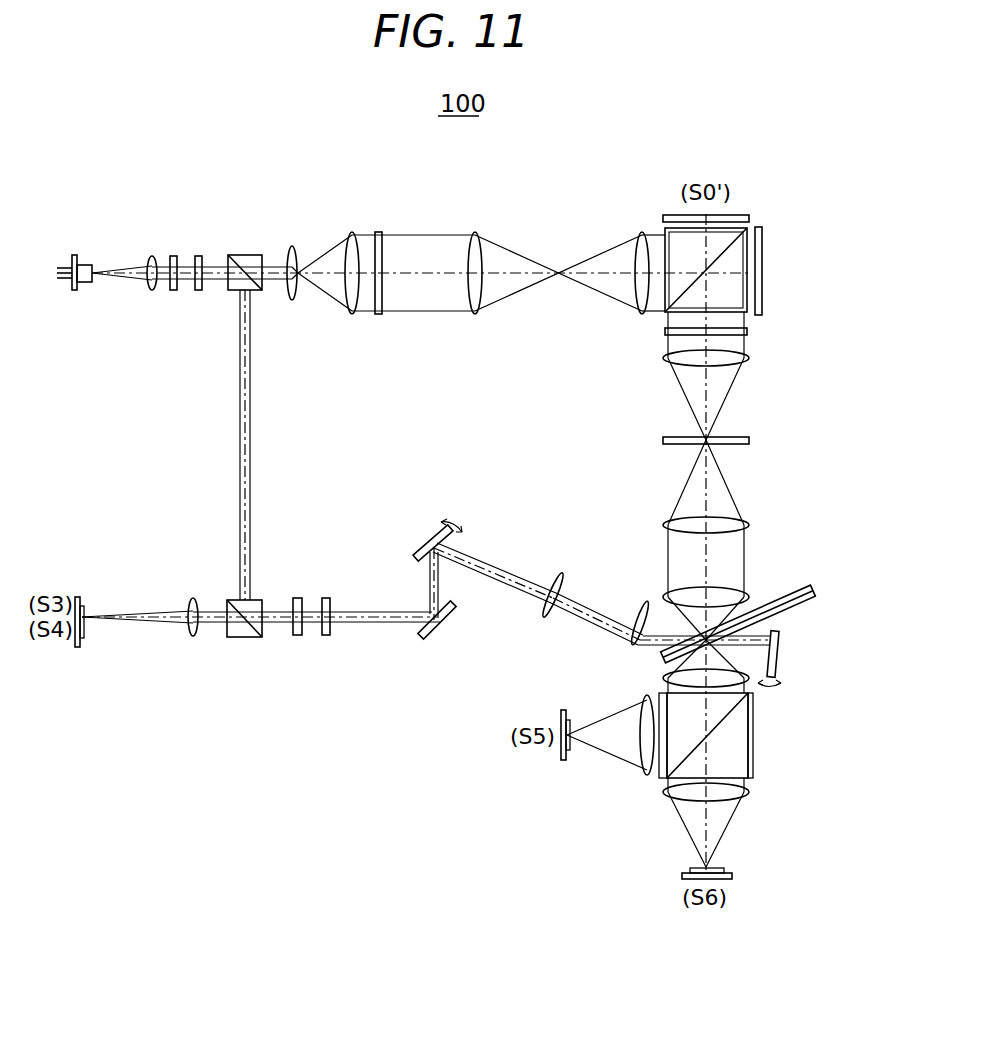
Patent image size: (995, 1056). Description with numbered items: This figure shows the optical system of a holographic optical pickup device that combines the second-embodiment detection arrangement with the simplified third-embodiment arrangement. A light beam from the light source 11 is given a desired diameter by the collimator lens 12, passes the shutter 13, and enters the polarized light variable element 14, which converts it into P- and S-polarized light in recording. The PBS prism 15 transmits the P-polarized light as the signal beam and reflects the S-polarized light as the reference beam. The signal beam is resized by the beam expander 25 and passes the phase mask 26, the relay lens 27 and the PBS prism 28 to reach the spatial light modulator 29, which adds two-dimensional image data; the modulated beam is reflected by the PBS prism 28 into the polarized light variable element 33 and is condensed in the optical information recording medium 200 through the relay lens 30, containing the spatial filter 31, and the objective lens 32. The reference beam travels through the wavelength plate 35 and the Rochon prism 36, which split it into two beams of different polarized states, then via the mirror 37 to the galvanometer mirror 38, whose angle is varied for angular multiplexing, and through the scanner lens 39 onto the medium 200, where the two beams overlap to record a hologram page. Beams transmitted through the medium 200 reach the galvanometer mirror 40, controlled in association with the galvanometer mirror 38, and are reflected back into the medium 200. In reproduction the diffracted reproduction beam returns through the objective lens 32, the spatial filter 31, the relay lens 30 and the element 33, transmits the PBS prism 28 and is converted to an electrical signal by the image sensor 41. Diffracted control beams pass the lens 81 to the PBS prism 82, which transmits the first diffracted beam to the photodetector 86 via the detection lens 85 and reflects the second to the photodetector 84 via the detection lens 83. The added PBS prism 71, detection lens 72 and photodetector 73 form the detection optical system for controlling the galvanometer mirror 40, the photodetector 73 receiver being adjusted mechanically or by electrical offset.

The light source 11 is at (84, 262).
The collimator lens 12 is at (150, 257).
The shutter 13 is at (173, 256).
The polarized light variable element 14 is at (198, 256).
The PBS prism 15 is at (236, 258).
The beam expander 25 is at (360, 222).
The phase mask 26 is at (378, 231).
The relay lens 27 is at (645, 224).
The PBS prism 28 is at (672, 242).
The spatial light modulator 29 is at (763, 258).
The relay lens 30 is at (659, 355).
The spatial filter 31 is at (750, 440).
The objective lens 32 is at (664, 597).
The polarized light variable element 33 is at (748, 332).
The wavelength plate 35 is at (298, 598).
The Rochon prism 36 is at (326, 598).
The mirror 37 is at (446, 624).
The galvanometer mirror 38 is at (428, 540).
The scanner lens 39 is at (542, 618).
The galvanometer mirror 40 is at (780, 650).
The image sensor 41 is at (744, 214).
The PBS prism 71 is at (250, 600).
The detection lens 72 is at (193, 598).
The photodetector 73 is at (80, 596).
The lens 81 is at (668, 678).
The PBS prism 82 is at (738, 735).
The detection lens 83 is at (645, 778).
The photodetector 84 is at (565, 762).
The detection lens 85 is at (675, 795).
The photodetector 86 is at (733, 875).
The optical information recording medium 200 is at (817, 593).